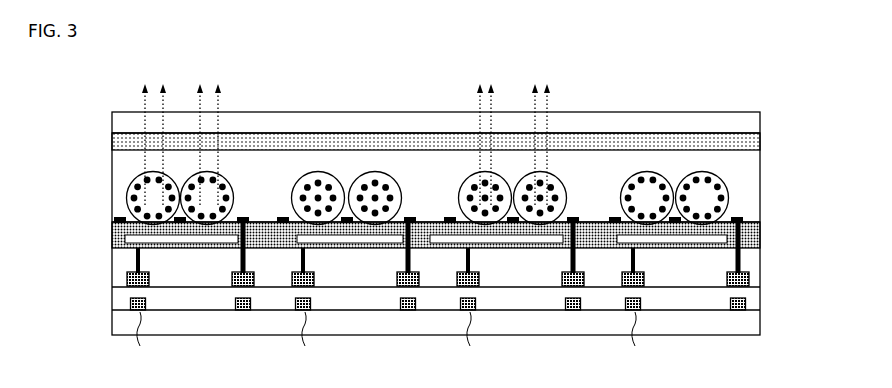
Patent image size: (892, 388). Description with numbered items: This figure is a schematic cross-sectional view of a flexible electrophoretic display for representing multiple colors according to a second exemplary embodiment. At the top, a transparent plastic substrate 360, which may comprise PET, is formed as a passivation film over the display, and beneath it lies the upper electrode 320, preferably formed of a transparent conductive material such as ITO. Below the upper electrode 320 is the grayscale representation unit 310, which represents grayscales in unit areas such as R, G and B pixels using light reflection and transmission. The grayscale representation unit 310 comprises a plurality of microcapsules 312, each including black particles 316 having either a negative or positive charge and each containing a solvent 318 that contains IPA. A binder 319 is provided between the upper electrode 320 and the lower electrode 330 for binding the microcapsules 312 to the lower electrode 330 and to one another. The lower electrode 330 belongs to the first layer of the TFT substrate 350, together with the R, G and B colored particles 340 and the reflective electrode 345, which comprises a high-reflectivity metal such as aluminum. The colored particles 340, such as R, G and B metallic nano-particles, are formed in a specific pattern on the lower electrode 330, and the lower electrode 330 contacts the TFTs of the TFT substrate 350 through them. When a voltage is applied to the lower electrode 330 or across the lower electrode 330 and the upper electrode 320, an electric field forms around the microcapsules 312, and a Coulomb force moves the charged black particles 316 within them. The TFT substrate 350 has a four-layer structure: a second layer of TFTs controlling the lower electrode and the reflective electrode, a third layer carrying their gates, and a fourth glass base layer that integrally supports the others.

The transparent plastic substrate 360 is at (760, 115).
The upper electrode 320 is at (760, 138).
The solvent 318 is at (142, 176).
The grayscale representation unit 310 is at (108, 153).
The microcapsule 312 is at (721, 180).
The black particles 316 is at (724, 199).
The binder 319 is at (745, 218).
The lower electrode 330 is at (104, 214).
The colored particles 340 is at (760, 240).
The reflective electrode 345 is at (740, 258).
The TFT substrate 350 is at (112, 226).